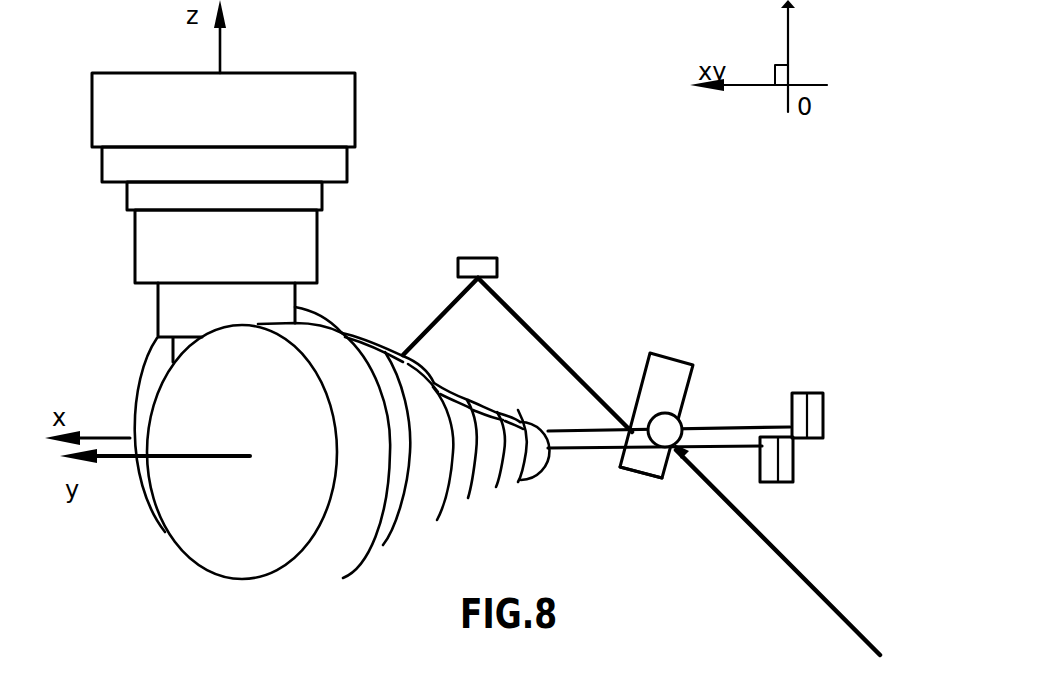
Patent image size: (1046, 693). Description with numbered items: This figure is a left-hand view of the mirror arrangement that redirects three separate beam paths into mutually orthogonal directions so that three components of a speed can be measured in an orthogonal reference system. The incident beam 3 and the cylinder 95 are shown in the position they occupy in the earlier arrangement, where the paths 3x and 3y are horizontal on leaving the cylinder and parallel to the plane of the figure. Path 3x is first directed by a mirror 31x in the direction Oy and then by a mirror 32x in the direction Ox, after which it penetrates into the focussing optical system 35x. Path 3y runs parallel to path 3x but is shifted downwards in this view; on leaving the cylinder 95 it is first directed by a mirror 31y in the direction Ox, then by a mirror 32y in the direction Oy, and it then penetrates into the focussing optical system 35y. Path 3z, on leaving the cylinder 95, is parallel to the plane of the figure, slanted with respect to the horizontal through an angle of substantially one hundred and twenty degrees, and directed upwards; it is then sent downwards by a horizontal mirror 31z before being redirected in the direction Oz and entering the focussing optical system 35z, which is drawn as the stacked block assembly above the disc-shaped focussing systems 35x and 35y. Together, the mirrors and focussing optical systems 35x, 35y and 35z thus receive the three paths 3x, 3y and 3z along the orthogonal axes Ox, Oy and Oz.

The focussing optical system 35z is at (337, 105).
The focussing optical system 35x is at (148, 513).
The focussing optical system 35y is at (243, 548).
The horizontal mirror 31z is at (480, 270).
The path 3z is at (442, 310).
The path 3x is at (583, 428).
The path 3y is at (560, 450).
The cylinder 95 is at (670, 380).
The mirror 32x is at (655, 468).
The mirror 32y is at (676, 455).
The mirror 31x is at (812, 405).
The mirror 31y is at (793, 460).
The incident beam 3 is at (805, 585).